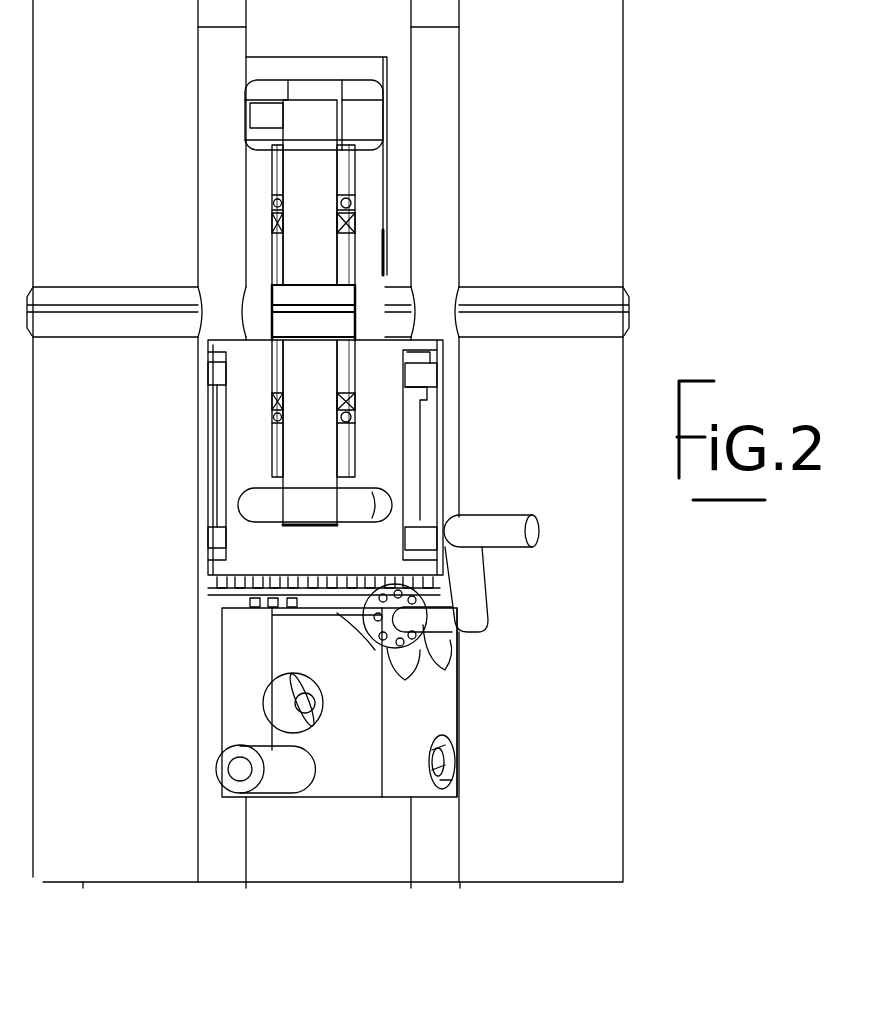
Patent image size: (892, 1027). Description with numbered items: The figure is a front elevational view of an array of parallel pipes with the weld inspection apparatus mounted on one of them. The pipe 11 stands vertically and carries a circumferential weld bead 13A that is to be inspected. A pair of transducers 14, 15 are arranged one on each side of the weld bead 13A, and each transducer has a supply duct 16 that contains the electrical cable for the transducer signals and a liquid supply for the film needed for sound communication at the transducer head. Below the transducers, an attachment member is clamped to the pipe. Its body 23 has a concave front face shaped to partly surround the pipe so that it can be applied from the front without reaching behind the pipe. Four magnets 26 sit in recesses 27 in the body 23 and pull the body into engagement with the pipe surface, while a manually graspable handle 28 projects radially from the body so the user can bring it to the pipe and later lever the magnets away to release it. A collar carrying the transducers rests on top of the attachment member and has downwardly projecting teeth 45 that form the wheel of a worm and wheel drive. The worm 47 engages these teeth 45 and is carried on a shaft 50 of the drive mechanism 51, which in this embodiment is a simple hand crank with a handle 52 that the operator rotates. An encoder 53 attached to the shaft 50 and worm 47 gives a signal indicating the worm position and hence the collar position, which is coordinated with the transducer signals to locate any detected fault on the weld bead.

The pipe 11 is at (603, 158).
The weld bead 13A is at (573, 305).
The transducer 14 is at (318, 205).
The transducer 15 is at (330, 380).
The supply duct 16 is at (258, 118).
The body 23 is at (438, 703).
The magnets 26 is at (435, 758).
The recesses 27 is at (452, 783).
The handle 28 is at (278, 785).
The teeth 45 is at (208, 588).
The worm 47 is at (248, 605).
The shaft 50 is at (462, 640).
The drive mechanism 51 is at (510, 598).
The handle 52 is at (492, 520).
The encoder 53 is at (370, 615).